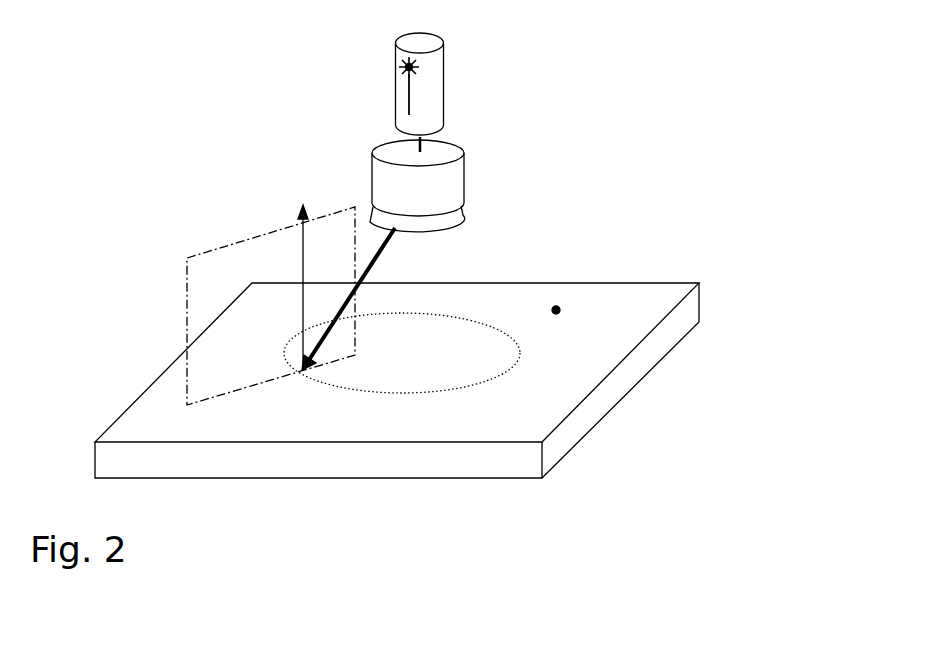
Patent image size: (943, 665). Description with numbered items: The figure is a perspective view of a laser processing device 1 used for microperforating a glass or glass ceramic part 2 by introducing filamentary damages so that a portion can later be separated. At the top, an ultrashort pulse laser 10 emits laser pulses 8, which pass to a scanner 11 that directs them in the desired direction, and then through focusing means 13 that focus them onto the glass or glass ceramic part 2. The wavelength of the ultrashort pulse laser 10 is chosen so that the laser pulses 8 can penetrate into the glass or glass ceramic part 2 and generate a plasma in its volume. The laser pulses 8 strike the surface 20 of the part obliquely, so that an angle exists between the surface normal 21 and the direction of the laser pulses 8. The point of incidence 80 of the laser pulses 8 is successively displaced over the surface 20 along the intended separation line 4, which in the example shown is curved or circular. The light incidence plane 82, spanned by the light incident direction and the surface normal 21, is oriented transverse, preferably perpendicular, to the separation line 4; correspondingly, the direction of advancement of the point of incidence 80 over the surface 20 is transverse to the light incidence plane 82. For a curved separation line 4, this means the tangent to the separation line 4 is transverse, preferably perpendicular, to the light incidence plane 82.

The laser processing device 1 is at (303, 100).
The glass or glass ceramic part 2 is at (673, 283).
The separation line 4 is at (328, 383).
The laser pulses 8 is at (362, 228).
The ultrashort pulse laser 10 is at (443, 53).
The scanner 11 is at (464, 153).
The focusing means 13 is at (465, 213).
The surface 20 is at (556, 310).
The surface normal 21 is at (303, 240).
The point of incidence 80 is at (298, 360).
The light incidence plane 82 is at (187, 288).